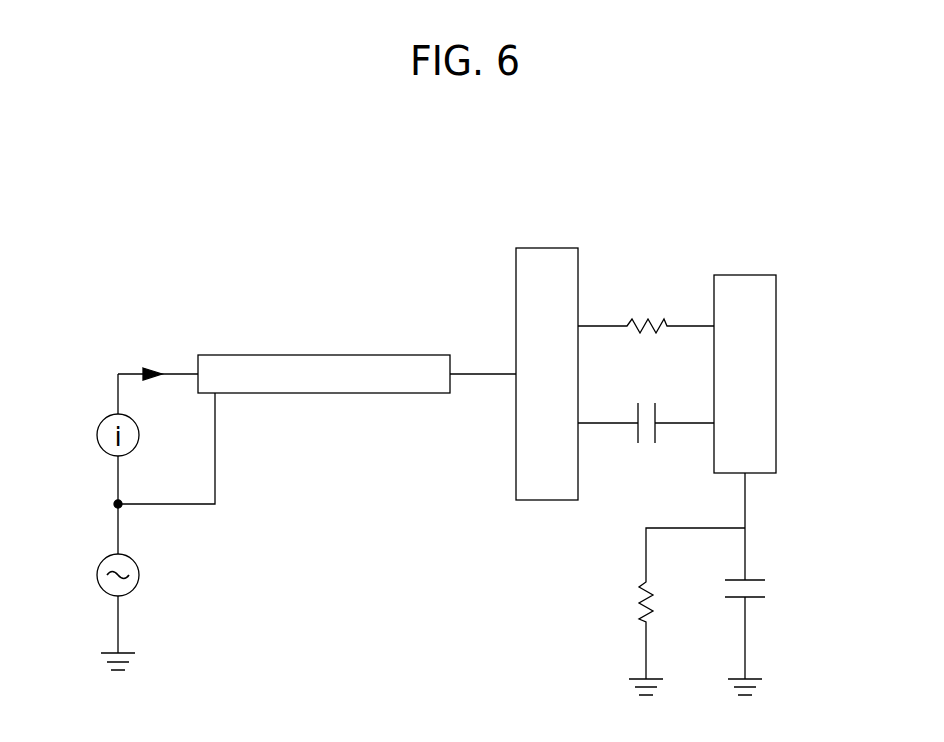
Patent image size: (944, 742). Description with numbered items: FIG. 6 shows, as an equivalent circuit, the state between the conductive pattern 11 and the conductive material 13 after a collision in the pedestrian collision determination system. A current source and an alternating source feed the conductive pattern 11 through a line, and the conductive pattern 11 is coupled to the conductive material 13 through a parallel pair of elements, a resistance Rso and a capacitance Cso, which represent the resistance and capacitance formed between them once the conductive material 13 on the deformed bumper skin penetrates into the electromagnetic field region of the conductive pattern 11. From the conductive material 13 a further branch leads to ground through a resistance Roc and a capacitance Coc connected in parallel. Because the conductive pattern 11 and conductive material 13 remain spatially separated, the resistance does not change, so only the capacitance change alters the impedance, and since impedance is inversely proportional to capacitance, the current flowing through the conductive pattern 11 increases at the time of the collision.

The conductive pattern 11 is at (545, 259).
The conductive material 13 is at (743, 283).
The short-circuit resistance Rso is at (646, 307).
The capacitance Cso is at (646, 442).
The open-circuit resistance Roc is at (661, 611).
The open-circuit capacitance Coc is at (774, 584).